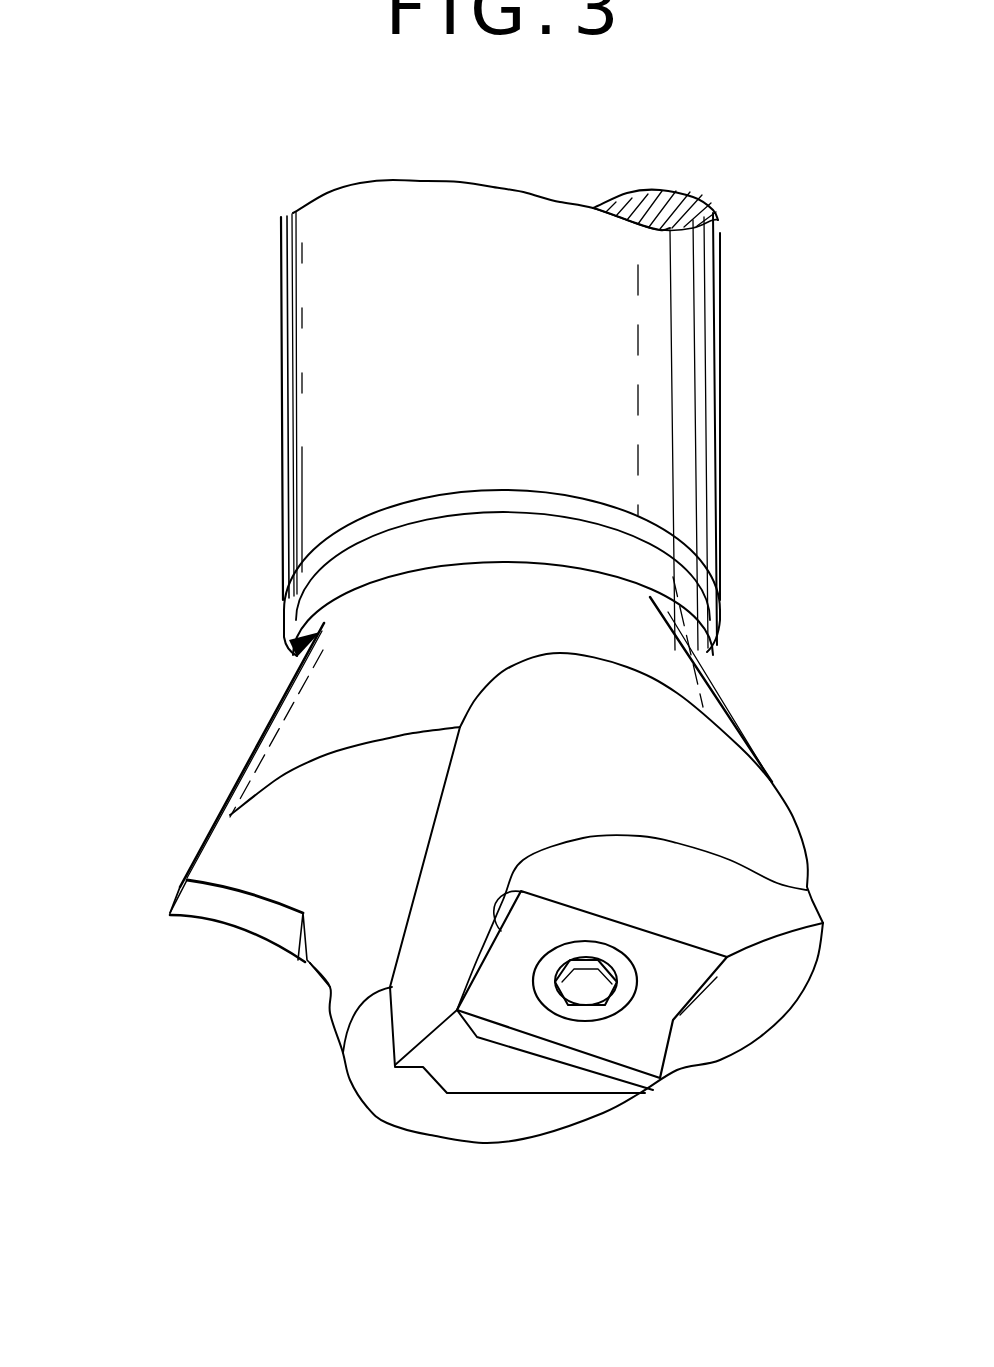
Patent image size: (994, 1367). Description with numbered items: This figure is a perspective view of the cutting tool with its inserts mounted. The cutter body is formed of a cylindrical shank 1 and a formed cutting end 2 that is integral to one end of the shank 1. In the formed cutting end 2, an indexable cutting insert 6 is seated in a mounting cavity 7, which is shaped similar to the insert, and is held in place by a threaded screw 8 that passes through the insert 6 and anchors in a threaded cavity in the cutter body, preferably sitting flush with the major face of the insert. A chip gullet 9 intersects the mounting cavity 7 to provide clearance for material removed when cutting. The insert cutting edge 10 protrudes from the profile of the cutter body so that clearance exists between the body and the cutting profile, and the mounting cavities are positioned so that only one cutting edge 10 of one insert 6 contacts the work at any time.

The cylindrical shank 1 is at (478, 343).
The formed cutting end 2 is at (347, 705).
The indexable cutting insert 6 is at (194, 872).
The mounting cavity 7 is at (507, 1077).
The threaded screw 8 is at (573, 1017).
The chip gullet 9 is at (620, 791).
The insert cutting edge 10 is at (250, 930).